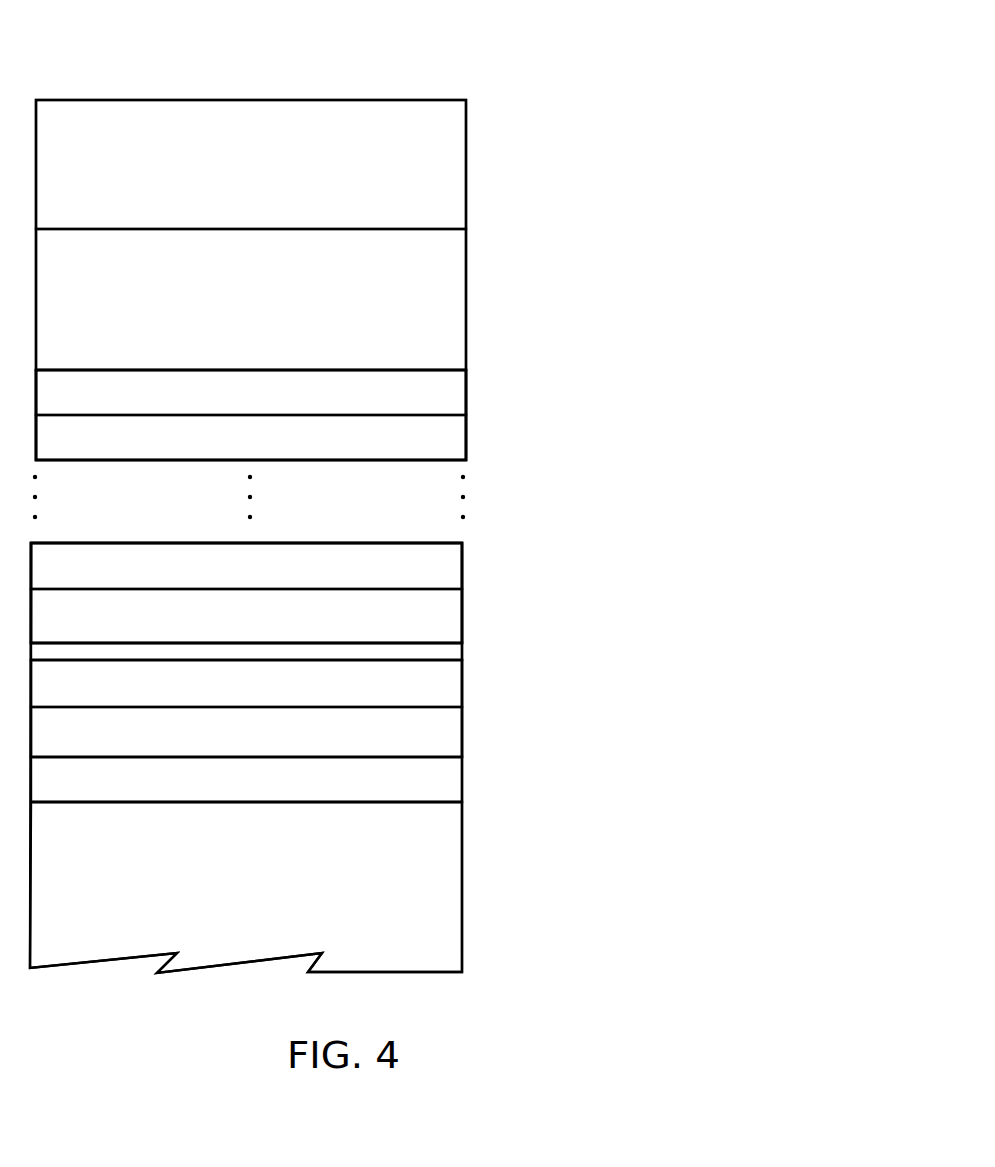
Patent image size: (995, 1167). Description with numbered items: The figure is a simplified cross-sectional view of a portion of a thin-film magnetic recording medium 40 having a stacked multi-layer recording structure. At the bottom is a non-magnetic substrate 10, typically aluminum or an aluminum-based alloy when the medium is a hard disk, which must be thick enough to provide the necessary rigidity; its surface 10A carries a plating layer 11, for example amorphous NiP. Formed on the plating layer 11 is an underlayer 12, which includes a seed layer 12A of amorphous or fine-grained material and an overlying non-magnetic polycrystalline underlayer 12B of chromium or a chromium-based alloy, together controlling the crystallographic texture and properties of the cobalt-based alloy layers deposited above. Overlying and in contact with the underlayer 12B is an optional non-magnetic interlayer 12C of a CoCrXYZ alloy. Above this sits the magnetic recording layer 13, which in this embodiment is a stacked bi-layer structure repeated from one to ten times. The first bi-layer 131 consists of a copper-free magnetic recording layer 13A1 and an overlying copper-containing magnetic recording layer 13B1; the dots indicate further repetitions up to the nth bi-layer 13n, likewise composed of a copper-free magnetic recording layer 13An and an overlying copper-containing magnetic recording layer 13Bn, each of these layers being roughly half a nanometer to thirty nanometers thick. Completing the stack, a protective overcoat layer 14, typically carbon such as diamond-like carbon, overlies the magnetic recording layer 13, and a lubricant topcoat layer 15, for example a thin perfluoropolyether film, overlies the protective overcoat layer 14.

The thin-film magnetic recording medium 40 is at (396, 82).
The lubricant topcoat layer 15 is at (476, 167).
The protective overcoat layer 14 is at (476, 292).
The magnetic recording layer 13 is at (737, 372).
The nth [ML/CuML] bi-layer 13n is at (667, 372).
The Cu-containing magnetic recording layer (CuML) 13Bn is at (476, 389).
The Cu-free magnetic recording layer (ML) 13An is at (476, 438).
The first [ML/CuML] bi-layer 131 is at (662, 543).
The Cu-containing magnetic recording layer (CuML) 13B1 is at (474, 563).
The Cu-free magnetic recording layer (ML) 13A1 is at (474, 611).
The non-magnetic interlayer 12C is at (474, 651).
The underlayer 12 is at (694, 672).
The polycrystalline underlayer 12B is at (474, 682).
The seed layer 12A is at (474, 732).
The plating layer 11 is at (474, 777).
The substrate surface 10A is at (423, 802).
The non-magnetic substrate 10 is at (474, 903).